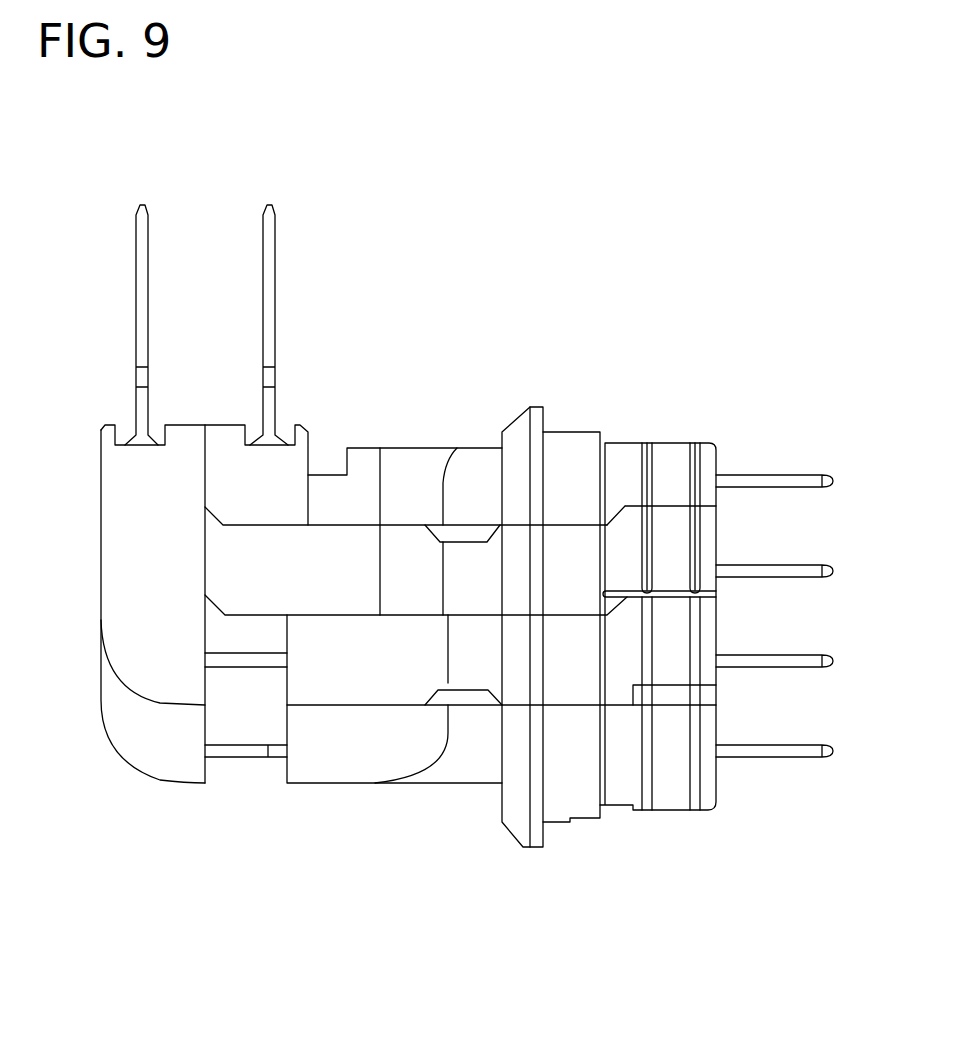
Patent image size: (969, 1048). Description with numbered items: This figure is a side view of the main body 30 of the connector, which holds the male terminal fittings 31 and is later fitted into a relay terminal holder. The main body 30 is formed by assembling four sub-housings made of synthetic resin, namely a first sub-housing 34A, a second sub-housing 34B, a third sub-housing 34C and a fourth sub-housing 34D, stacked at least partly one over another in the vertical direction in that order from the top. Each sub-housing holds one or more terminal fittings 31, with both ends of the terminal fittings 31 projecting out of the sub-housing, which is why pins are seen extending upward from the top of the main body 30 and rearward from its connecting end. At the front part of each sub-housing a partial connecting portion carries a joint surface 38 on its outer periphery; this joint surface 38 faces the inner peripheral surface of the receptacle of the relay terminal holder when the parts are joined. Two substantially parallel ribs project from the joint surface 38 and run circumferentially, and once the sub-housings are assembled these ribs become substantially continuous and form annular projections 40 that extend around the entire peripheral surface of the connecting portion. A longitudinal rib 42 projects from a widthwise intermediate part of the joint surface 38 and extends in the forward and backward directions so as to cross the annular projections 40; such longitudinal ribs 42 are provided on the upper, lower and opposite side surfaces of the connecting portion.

The main body 30 is at (445, 248).
The male terminal fitting 31 is at (143, 227).
The first sub-housing 34A is at (430, 458).
The second sub-housing 34B is at (397, 537).
The third sub-housing 34C is at (362, 663).
The fourth sub-housing 34D is at (443, 760).
The joint surface 38 is at (668, 787).
The annular projection 40 is at (647, 445).
The longitudinal rib 42 is at (708, 594).